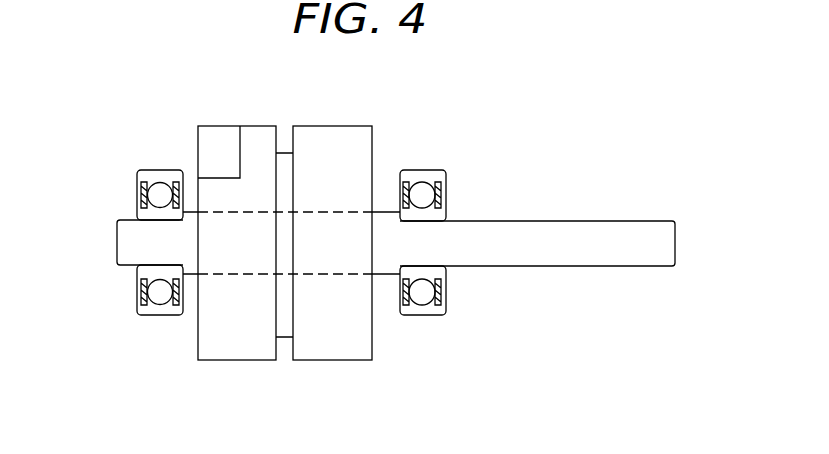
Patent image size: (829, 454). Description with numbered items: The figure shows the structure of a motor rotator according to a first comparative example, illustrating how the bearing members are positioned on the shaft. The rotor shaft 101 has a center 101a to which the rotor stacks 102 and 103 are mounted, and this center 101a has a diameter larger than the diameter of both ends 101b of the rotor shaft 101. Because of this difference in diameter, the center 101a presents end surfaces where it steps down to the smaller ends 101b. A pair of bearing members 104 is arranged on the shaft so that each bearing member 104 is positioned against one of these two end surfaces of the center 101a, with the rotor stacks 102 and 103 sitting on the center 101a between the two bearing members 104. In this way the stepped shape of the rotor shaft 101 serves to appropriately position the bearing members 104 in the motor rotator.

The rotor shaft 101 is at (373, 213).
The center 101a is at (386, 213).
The both ends 101b is at (132, 228).
The rotor stack 102 is at (333, 342).
The rotor stack 103 is at (237, 342).
The bearing member 104 is at (159, 292).